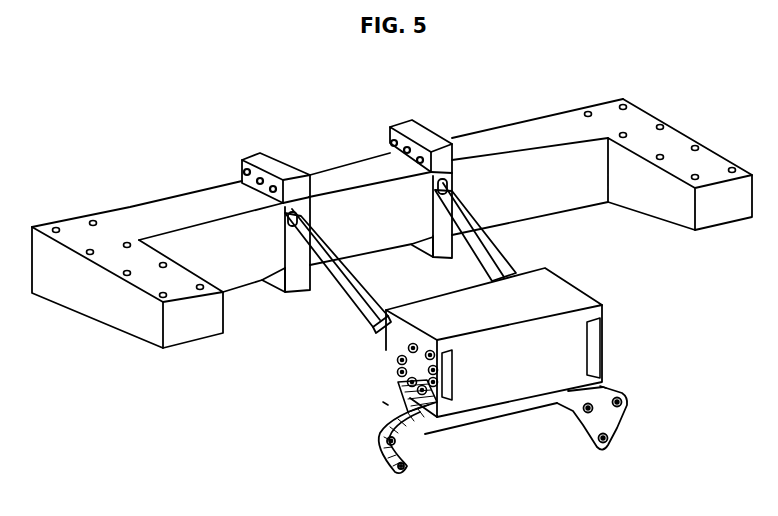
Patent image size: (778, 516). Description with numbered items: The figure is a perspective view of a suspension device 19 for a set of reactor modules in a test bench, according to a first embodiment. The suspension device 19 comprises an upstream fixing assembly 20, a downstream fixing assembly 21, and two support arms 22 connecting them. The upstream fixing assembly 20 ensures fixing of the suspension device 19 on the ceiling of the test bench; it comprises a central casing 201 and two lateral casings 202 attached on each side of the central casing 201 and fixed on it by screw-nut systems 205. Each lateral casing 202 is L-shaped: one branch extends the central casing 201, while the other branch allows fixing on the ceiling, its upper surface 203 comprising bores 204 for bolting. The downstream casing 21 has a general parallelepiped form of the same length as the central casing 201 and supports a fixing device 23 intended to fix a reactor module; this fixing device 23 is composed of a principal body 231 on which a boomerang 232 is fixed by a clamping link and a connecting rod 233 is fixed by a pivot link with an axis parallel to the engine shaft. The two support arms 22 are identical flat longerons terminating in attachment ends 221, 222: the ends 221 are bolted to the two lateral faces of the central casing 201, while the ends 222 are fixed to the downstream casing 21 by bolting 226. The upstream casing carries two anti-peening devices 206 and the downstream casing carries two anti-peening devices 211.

The suspension device 19 is at (213, 133).
The upstream fixing assembly 20 is at (361, 108).
The central casing 201 is at (337, 172).
The lateral casing 202 is at (237, 208).
The upper surface 203 is at (80, 227).
The bore 204 is at (200, 285).
The screw-nut system 205 is at (273, 187).
The anti-peening device 206 is at (290, 292).
The downstream fixing assembly 21 is at (522, 372).
The anti-peening device 211 is at (383, 402).
The support arm 22 is at (352, 308).
The attachment end 221 is at (304, 222).
The attachment end 222 is at (398, 347).
The bolting 226 is at (413, 348).
The fixing device 23 is at (378, 423).
The principal body 231 is at (499, 413).
The boomerang 232 is at (610, 425).
The connecting rod 233 is at (382, 460).